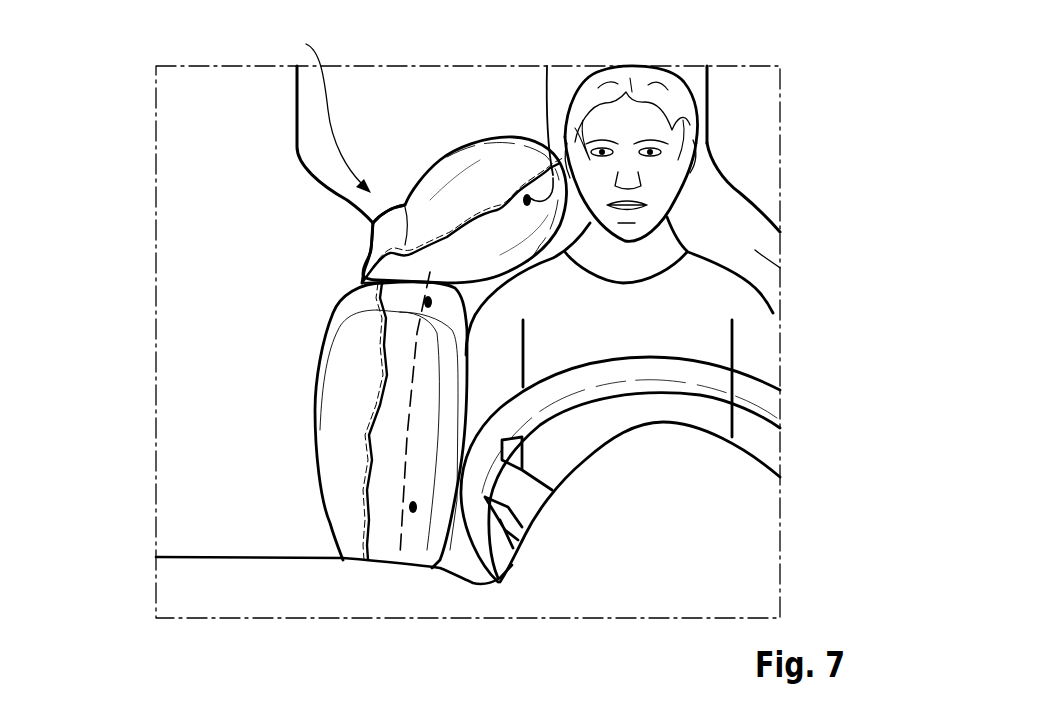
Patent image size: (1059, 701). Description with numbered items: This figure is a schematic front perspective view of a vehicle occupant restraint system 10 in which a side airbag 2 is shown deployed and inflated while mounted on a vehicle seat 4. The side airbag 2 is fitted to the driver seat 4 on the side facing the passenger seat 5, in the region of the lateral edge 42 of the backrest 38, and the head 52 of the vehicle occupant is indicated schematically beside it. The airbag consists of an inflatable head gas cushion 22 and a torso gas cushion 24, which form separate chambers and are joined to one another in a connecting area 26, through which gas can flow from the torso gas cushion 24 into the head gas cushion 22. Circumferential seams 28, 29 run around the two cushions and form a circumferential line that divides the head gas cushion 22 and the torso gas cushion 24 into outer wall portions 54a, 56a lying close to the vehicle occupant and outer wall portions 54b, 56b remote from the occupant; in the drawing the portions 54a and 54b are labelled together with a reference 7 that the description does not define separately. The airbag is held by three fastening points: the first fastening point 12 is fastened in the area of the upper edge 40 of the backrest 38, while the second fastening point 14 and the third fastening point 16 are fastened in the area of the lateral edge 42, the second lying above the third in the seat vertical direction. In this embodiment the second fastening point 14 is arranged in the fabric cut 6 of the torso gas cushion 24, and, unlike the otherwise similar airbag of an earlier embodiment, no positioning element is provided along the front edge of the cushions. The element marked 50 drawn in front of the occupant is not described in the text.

The side airbag 2 is at (329, 110).
The vehicle seat 4 is at (733, 211).
The passenger seat 5 is at (165, 281).
The fabric cut 6 is at (266, 347).
The side airbag 7 is at (488, 174).
The vehicle occupant restraint system 10 is at (112, 96).
The first fastening point 12 is at (531, 160).
The second fastening point 14 is at (430, 302).
The third fastening point 16 is at (414, 509).
The head gas cushion 22 is at (393, 237).
The torso gas cushion 24 is at (330, 417).
The connecting area 26 is at (345, 281).
The circumferential seam 28 is at (367, 505).
The circumferential seam 29 is at (418, 243).
The backrest 38 is at (767, 259).
The upper edge 40 is at (740, 185).
The lateral edge 42 is at (402, 532).
The steering wheel 50 is at (550, 350).
The head 52 is at (633, 75).
The outer wall portion 54a is at (557, 233).
The outer wall portion 54b is at (477, 142).
The outer wall portion 56a is at (457, 467).
The outer wall portion 56b is at (317, 367).